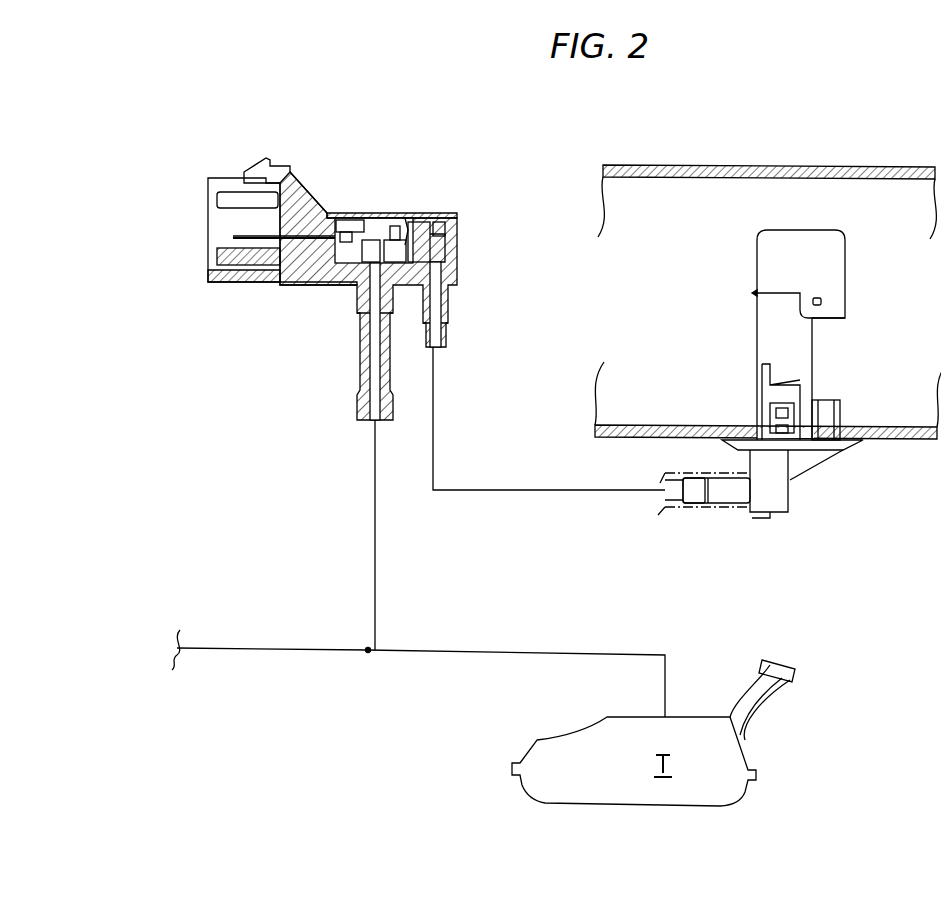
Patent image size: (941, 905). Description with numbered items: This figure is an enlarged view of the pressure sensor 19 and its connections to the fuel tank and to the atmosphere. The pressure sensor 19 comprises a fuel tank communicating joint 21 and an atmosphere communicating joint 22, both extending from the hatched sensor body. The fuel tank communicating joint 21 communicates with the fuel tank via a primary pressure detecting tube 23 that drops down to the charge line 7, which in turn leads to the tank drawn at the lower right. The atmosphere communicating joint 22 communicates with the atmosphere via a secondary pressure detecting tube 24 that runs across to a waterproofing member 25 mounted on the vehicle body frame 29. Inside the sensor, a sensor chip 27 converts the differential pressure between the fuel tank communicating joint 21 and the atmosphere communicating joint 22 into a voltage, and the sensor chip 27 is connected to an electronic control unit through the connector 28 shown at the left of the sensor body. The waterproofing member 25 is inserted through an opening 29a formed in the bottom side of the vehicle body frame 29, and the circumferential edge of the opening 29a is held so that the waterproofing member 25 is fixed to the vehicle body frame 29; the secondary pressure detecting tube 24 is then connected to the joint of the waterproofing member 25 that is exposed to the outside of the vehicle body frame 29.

The charge line 7 is at (295, 652).
The pressure sensor 19 is at (420, 196).
The fuel tank communicating joint 21 is at (357, 368).
The atmosphere communicating joint 22 is at (448, 328).
The primary pressure detecting tube 23 is at (369, 548).
The secondary pressure detecting tube 24 is at (500, 490).
The waterproofing member 25 is at (823, 378).
The sensor chip 27 is at (373, 230).
The connector 28 is at (228, 221).
The vehicle body frame 29 is at (860, 165).
The opening 29a is at (838, 416).